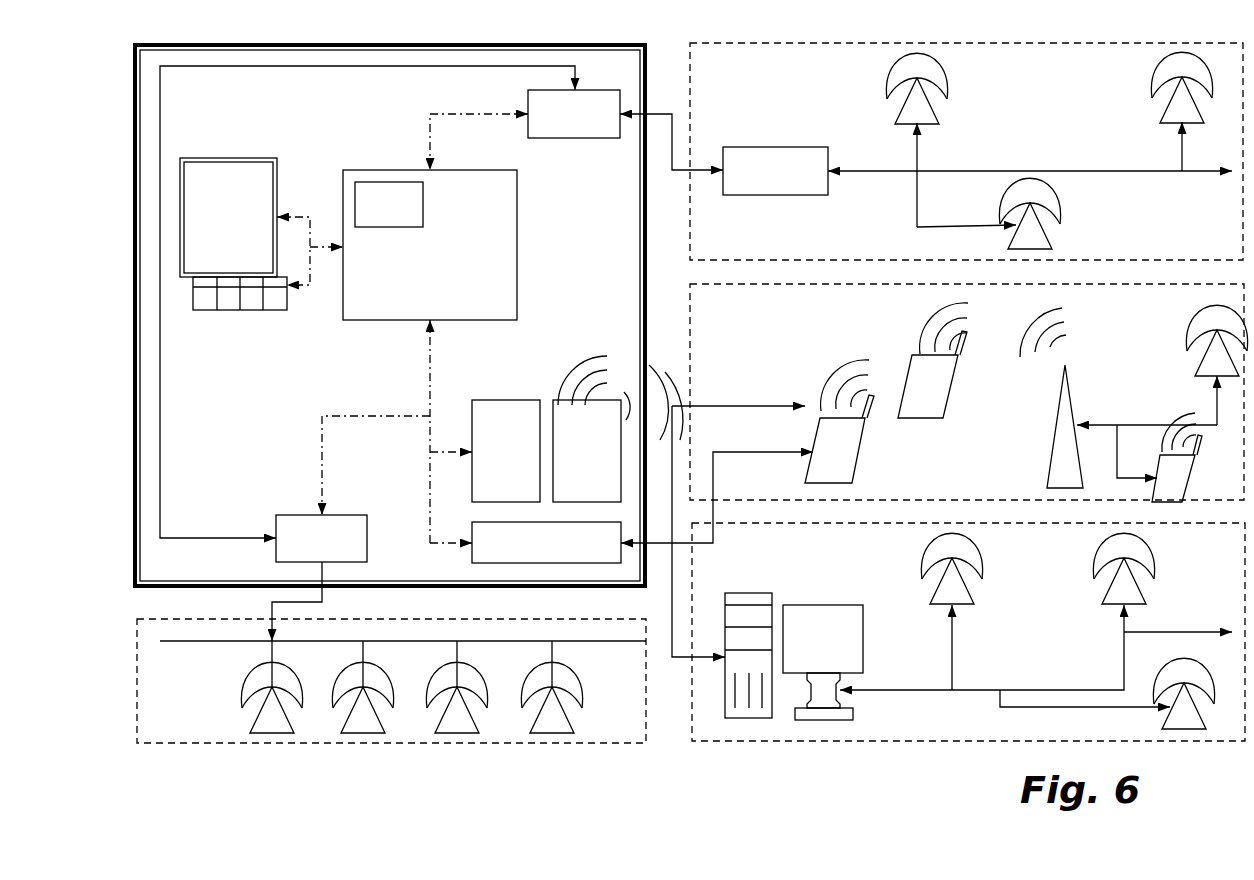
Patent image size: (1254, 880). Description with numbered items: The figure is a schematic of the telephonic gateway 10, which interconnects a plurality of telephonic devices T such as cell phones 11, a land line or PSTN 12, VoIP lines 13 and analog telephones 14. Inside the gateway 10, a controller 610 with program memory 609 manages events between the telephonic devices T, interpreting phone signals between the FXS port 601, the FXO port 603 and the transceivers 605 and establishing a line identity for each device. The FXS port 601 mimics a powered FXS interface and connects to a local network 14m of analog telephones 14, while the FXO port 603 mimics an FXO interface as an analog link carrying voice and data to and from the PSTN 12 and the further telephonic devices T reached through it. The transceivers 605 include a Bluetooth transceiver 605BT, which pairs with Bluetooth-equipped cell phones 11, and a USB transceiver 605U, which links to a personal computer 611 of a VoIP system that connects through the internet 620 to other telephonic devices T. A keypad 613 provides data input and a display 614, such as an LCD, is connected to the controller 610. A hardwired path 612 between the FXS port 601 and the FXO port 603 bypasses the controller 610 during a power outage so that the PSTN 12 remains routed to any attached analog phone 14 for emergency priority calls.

The gateway 10 is at (372, 43).
The hardwired path 612 is at (257, 67).
The display 614 is at (217, 183).
The keypad 613 is at (205, 303).
The program memory 609 is at (389, 204).
The controller 610 is at (430, 245).
The FXO port 603 is at (574, 114).
The FXS port 601 is at (321, 538).
The transceivers 605 is at (500, 397).
The Bluetooth transceiver 605BT is at (555, 362).
The USB transceiver 605U is at (478, 522).
The land line 12 is at (738, 155).
The cell phone 11 is at (840, 455).
The VoIP line 13 is at (794, 672).
The telephonic device T is at (925, 118).
The personal computer 611 is at (740, 718).
The internet 620 is at (880, 692).
The analog telephone 14 is at (280, 717).
The antenna bus line 14m is at (195, 643).